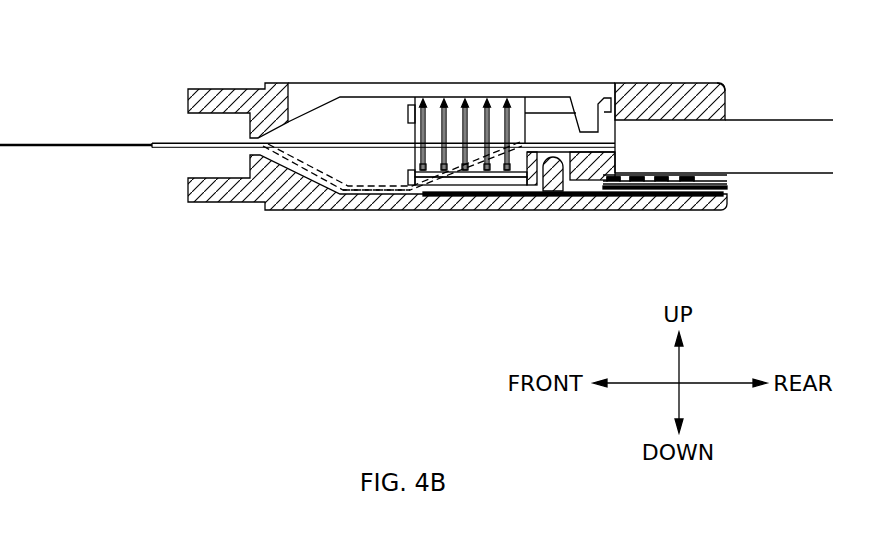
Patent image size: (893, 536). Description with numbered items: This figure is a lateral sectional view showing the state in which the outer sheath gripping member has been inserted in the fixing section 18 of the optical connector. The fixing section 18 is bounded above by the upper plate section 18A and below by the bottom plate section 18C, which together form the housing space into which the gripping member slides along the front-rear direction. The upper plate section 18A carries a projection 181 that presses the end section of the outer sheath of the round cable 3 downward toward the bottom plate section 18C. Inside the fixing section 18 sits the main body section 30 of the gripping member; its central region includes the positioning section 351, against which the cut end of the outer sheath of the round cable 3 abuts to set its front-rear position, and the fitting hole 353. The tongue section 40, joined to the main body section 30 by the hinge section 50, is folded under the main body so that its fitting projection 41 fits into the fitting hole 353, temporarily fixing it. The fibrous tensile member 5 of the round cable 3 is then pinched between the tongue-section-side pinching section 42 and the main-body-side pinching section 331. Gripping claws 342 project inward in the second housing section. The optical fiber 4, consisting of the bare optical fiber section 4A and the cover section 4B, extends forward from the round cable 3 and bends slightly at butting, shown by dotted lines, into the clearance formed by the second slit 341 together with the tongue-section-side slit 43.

The round cable 3 is at (772, 128).
The optical fiber 4 is at (28, 61).
The bare optical fiber section 4A is at (46, 144).
The cover section 4B is at (168, 143).
The fixing section 18 is at (280, 83).
The upper plate section 18A is at (655, 83).
The bottom plate section 18C is at (645, 212).
The projection 181 is at (718, 83).
The main body section 30 is at (408, 125).
The second slit 341 is at (483, 180).
The gripping claws 342 is at (464, 122).
The positioning section 351 is at (615, 160).
The fitting hole 353 is at (527, 186).
The tongue section 40 is at (650, 196).
The fitting projection 41 is at (560, 192).
The tongue-section-side pinching section 42 is at (682, 192).
The tongue-section-side slit 43 is at (462, 188).
The fibrous tensile member 5 is at (733, 189).
The hinge section 50 is at (398, 192).
The main-body-side pinching section 331 is at (727, 185).